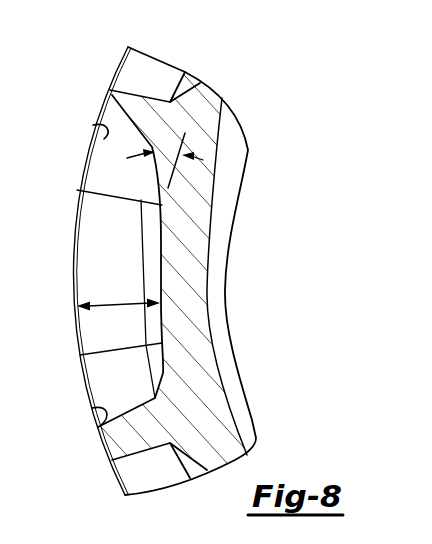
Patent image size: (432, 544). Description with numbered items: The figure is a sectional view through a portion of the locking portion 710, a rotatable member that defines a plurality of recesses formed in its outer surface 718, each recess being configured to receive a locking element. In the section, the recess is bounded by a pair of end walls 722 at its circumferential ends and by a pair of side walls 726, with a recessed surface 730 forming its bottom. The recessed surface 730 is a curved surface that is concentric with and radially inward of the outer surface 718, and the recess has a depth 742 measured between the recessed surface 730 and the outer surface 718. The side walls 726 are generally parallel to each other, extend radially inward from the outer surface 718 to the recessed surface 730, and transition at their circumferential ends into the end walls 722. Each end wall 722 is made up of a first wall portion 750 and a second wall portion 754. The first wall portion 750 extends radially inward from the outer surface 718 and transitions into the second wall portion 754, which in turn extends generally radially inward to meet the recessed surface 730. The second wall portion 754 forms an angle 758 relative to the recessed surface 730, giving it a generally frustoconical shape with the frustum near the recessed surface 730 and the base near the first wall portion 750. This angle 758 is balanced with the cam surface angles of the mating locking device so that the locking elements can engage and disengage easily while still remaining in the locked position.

The locking portion 710 is at (266, 80).
The outer surface 718 is at (110, 93).
The end walls 722 is at (125, 147).
The side walls 726 is at (86, 265).
The recessed surface 730 is at (160, 273).
The depth 742 is at (93, 301).
The first wall portion 750 is at (93, 125).
The second wall portion 754 is at (152, 177).
The angle 758 is at (170, 143).